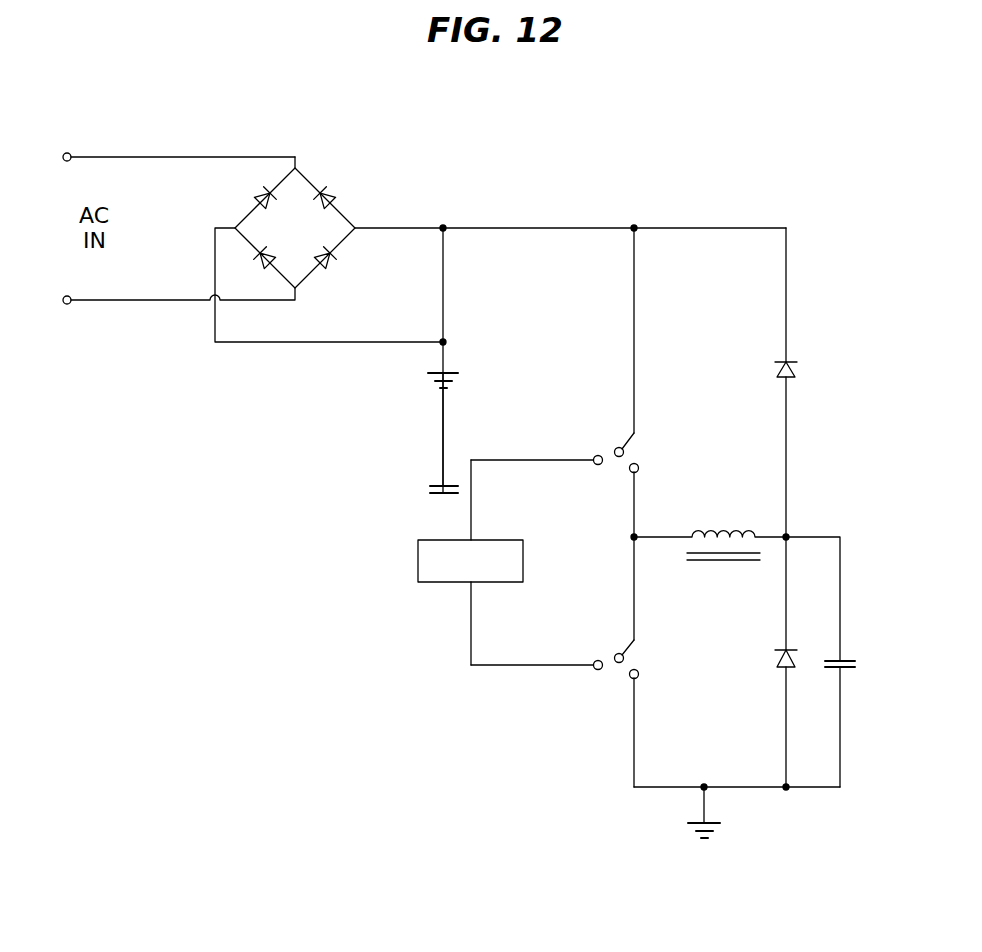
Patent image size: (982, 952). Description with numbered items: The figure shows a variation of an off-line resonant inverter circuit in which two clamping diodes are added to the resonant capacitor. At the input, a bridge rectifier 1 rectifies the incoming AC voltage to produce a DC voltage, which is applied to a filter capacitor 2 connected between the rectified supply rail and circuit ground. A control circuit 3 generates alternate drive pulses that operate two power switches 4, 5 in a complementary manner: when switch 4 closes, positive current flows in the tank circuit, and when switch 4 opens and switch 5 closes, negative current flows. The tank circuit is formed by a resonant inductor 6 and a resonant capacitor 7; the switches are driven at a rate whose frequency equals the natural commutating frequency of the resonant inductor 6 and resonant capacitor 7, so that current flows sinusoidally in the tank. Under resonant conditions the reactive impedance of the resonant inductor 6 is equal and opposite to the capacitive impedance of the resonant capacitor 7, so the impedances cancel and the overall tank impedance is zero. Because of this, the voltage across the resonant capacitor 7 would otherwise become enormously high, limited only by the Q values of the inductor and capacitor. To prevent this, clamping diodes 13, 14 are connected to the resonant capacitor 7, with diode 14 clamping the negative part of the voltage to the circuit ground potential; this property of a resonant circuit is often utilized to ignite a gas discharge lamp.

The bridge rectifier 1 is at (354, 186).
The filter capacitor 2 is at (458, 294).
The control circuit 3 is at (418, 553).
The power switch 4 is at (616, 447).
The power switch 5 is at (616, 654).
The resonant inductor 6 is at (712, 562).
The resonant capacitor 7 is at (850, 658).
The clamping diode 13 is at (775, 658).
The clamping diode 14 is at (797, 369).